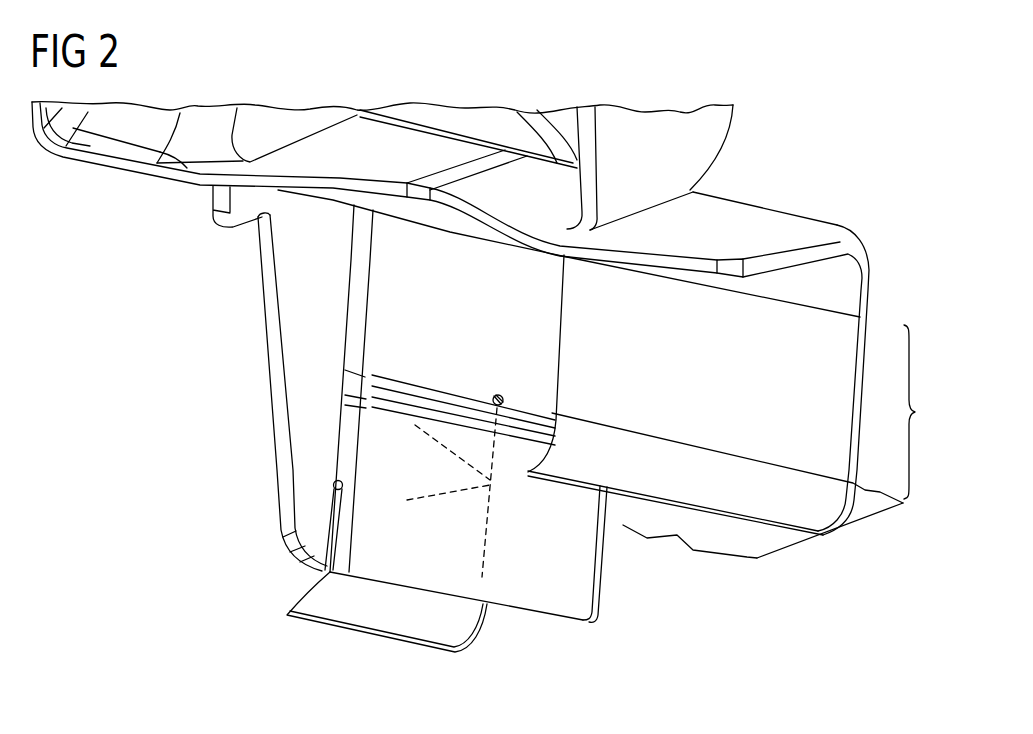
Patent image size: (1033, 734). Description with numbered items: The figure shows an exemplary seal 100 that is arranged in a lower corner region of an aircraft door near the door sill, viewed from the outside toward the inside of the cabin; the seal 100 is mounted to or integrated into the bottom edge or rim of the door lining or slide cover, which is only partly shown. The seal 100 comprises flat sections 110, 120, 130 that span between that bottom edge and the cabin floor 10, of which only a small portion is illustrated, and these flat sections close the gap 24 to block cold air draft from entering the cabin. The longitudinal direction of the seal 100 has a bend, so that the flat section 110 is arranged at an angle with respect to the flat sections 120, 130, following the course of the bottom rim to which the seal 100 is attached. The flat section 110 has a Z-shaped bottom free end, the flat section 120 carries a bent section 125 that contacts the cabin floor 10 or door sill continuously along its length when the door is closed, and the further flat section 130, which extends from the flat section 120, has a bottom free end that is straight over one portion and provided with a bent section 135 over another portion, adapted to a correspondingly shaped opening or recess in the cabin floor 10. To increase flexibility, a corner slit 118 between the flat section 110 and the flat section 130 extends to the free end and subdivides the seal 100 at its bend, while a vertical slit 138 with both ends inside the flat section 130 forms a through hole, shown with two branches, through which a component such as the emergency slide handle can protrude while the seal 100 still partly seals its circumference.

The seal 100 is at (150, 418).
The flat section 110 is at (294, 295).
The flat section 120 is at (850, 347).
The gap 24 is at (926, 412).
The bent section 125 is at (812, 509).
The cabin floor 10 is at (858, 511).
The flat section 130 is at (577, 585).
The slit 138 is at (487, 538).
The slit 118 is at (332, 516).
The bent section 135 is at (408, 623).